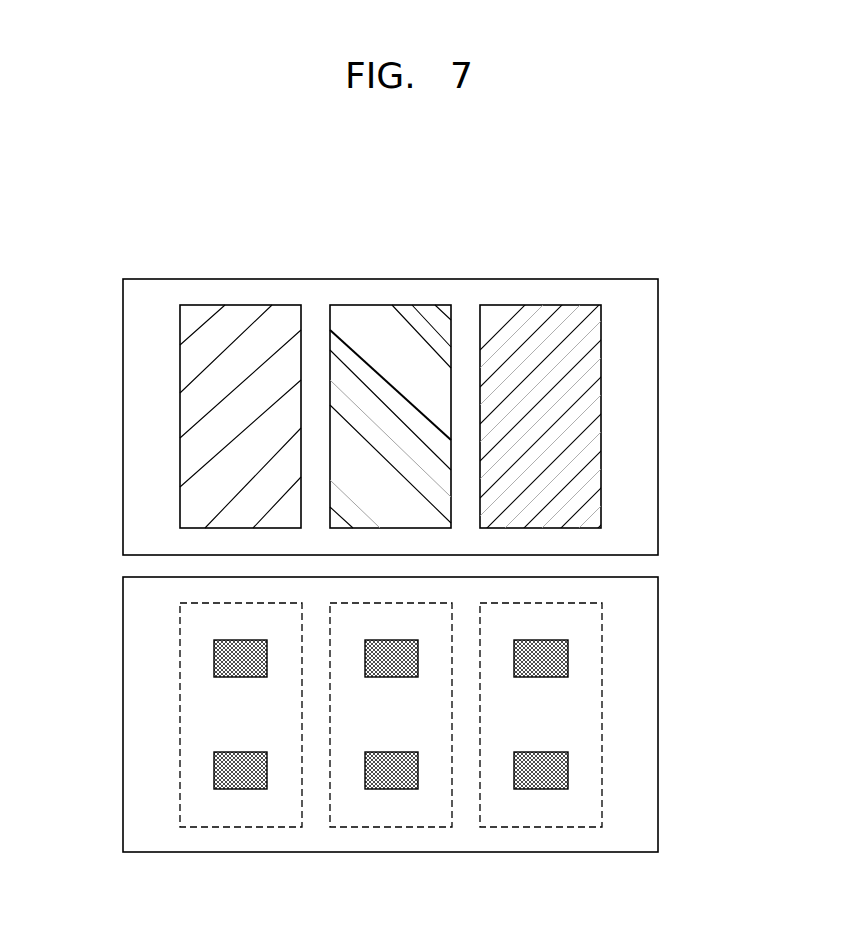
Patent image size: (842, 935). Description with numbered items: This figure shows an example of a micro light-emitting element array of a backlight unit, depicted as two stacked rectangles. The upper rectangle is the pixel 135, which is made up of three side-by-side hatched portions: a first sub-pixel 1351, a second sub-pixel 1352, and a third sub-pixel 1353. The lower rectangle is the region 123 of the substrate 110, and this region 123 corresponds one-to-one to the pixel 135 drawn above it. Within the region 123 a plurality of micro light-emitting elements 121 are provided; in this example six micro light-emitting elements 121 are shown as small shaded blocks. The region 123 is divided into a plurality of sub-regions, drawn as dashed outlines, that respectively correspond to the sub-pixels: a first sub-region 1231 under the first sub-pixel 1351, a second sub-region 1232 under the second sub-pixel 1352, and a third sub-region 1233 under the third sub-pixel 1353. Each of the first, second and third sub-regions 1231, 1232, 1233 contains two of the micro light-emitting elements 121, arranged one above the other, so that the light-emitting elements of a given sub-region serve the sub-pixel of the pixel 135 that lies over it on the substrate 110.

The substrate 110 is at (677, 688).
The micro light-emitting element 121 is at (213, 656).
The region 123 is at (323, 764).
The first sub-region 1231 is at (238, 827).
The second sub-region 1232 is at (388, 827).
The third sub-region 1233 is at (538, 827).
The pixel 135 is at (658, 417).
The first sub-pixel 1351 is at (243, 315).
The second sub-pixel 1352 is at (393, 315).
The third sub-pixel 1353 is at (545, 315).